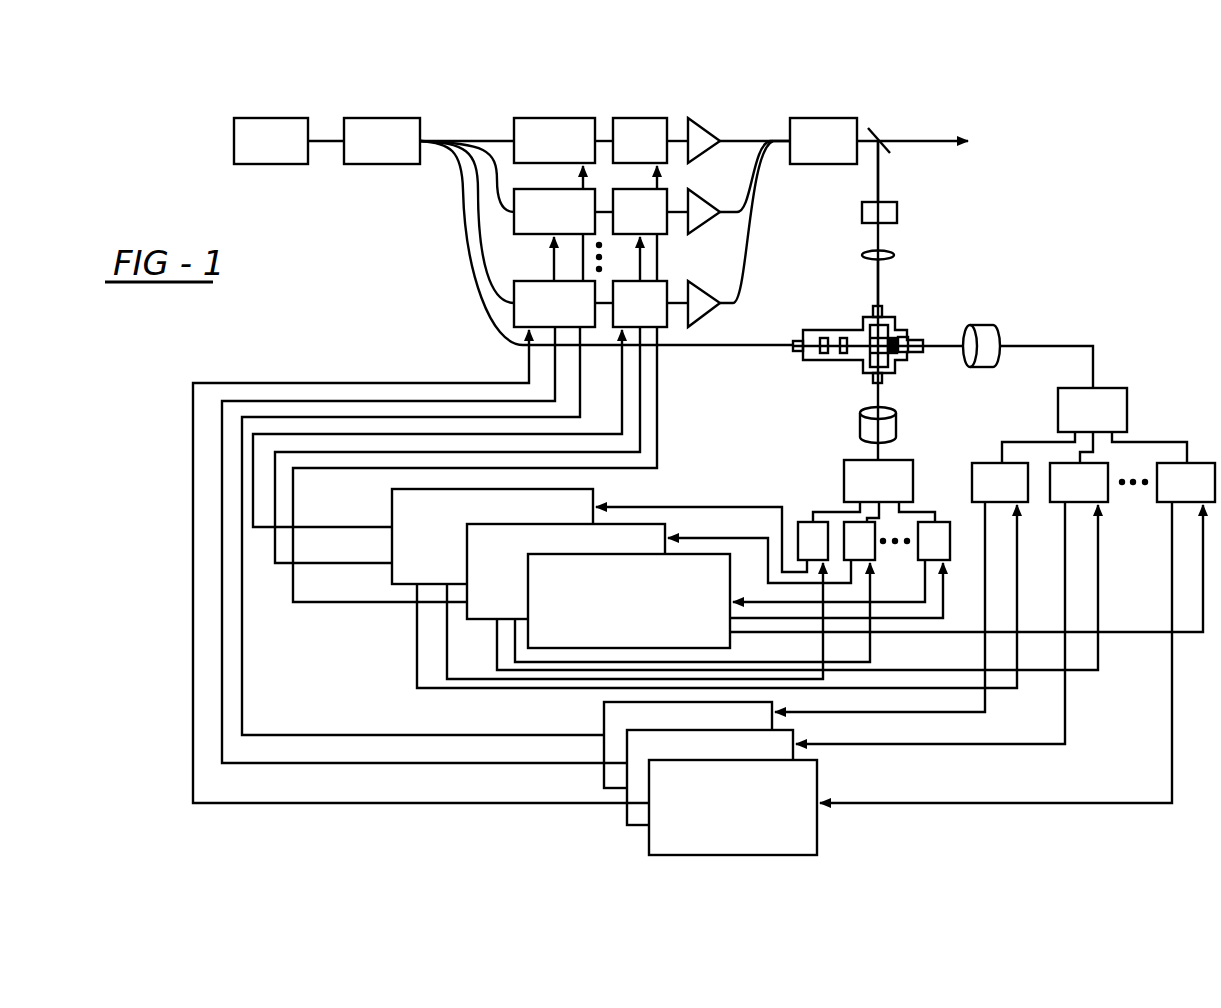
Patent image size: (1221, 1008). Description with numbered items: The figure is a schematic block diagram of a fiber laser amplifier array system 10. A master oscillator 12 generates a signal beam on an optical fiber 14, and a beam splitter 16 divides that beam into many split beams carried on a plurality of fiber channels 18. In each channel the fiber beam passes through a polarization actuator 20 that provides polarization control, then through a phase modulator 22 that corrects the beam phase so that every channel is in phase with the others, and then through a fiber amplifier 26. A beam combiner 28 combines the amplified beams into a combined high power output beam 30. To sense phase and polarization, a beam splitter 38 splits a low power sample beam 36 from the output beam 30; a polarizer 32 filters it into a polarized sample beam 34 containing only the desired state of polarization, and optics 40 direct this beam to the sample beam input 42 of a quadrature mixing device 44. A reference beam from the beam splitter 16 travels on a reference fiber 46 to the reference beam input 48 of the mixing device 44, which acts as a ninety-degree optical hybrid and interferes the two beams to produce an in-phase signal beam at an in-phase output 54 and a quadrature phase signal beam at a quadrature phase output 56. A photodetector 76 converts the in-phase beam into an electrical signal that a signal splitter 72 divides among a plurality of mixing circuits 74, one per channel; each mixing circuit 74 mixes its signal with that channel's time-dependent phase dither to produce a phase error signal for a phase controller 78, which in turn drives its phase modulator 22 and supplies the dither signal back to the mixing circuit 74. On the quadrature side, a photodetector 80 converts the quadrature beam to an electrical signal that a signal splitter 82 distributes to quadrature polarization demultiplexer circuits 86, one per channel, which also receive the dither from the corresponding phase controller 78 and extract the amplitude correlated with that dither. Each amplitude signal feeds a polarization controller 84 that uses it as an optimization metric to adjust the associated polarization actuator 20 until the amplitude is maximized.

The fiber laser amplifier array system 10 is at (1037, 131).
The master oscillator 12 is at (268, 118).
The optical fiber 14 is at (327, 141).
The beam splitter 16 is at (392, 118).
The fiber channels 18 is at (492, 141).
The polarization actuator 20 is at (545, 118).
The phase modulator 22 is at (638, 118).
The fiber amplifier 26 is at (698, 117).
The beam combiner 28 is at (820, 118).
The combined output beam 30 is at (928, 141).
The polarizer 32 is at (897, 213).
The polarized sample beam 34 is at (880, 235).
The sample beam 36 is at (878, 176).
The beam splitter 38 is at (876, 132).
The optics 40 is at (864, 252).
The sample beam input 42 is at (874, 309).
The quadrature mixing device 44 is at (849, 362).
The reference fiber 46 is at (698, 346).
The reference beam input 48 is at (796, 352).
The in-phase output 54 is at (884, 376).
The quadrature phase output 56 is at (915, 338).
The signal splitter 72 is at (844, 488).
The mixing circuits 74 is at (918, 562).
The photodetector 76 is at (860, 422).
The phase controller 78 is at (731, 583).
The photodetector 80 is at (986, 325).
The signal splitter 82 is at (1127, 418).
The polarization controllers 84 is at (817, 830).
The quadrature polarization demultiplexer circuits 86 is at (1156, 490).